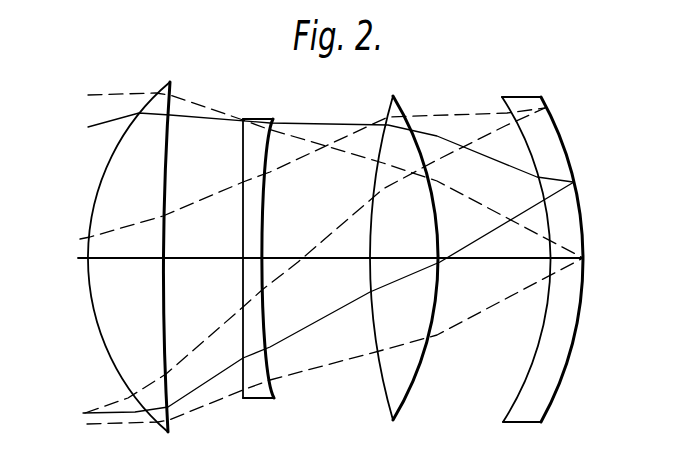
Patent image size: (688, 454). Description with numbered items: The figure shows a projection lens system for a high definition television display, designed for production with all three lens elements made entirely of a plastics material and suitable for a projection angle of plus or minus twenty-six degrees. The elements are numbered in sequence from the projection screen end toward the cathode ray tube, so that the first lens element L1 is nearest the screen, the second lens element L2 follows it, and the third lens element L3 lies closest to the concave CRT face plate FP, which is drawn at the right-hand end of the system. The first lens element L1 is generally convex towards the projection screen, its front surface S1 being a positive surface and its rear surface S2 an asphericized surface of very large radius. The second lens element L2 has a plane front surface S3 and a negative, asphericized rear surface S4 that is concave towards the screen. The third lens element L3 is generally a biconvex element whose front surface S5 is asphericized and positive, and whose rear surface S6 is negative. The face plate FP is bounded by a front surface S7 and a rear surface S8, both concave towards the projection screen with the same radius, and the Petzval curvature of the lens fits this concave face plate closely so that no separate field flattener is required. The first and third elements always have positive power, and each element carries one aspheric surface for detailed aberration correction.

The first lens element L1 is at (127, 257).
The second lens element L2 is at (254, 258).
The third lens element L3 is at (393, 258).
The CRT face plate FP is at (555, 259).
The first surface of lens element L1 S1 is at (112, 362).
The second surface of lens element L1 S2 is at (167, 313).
The first surface of lens element L2 S3 is at (243, 350).
The second surface of lens element L2 S4 is at (267, 357).
The first surface of lens element L3 S5 is at (372, 337).
The second surface of lens element L3 S6 is at (417, 378).
The first surface of the CRT face plate S7 is at (528, 375).
The second surface of the CRT face plate S8 is at (570, 362).